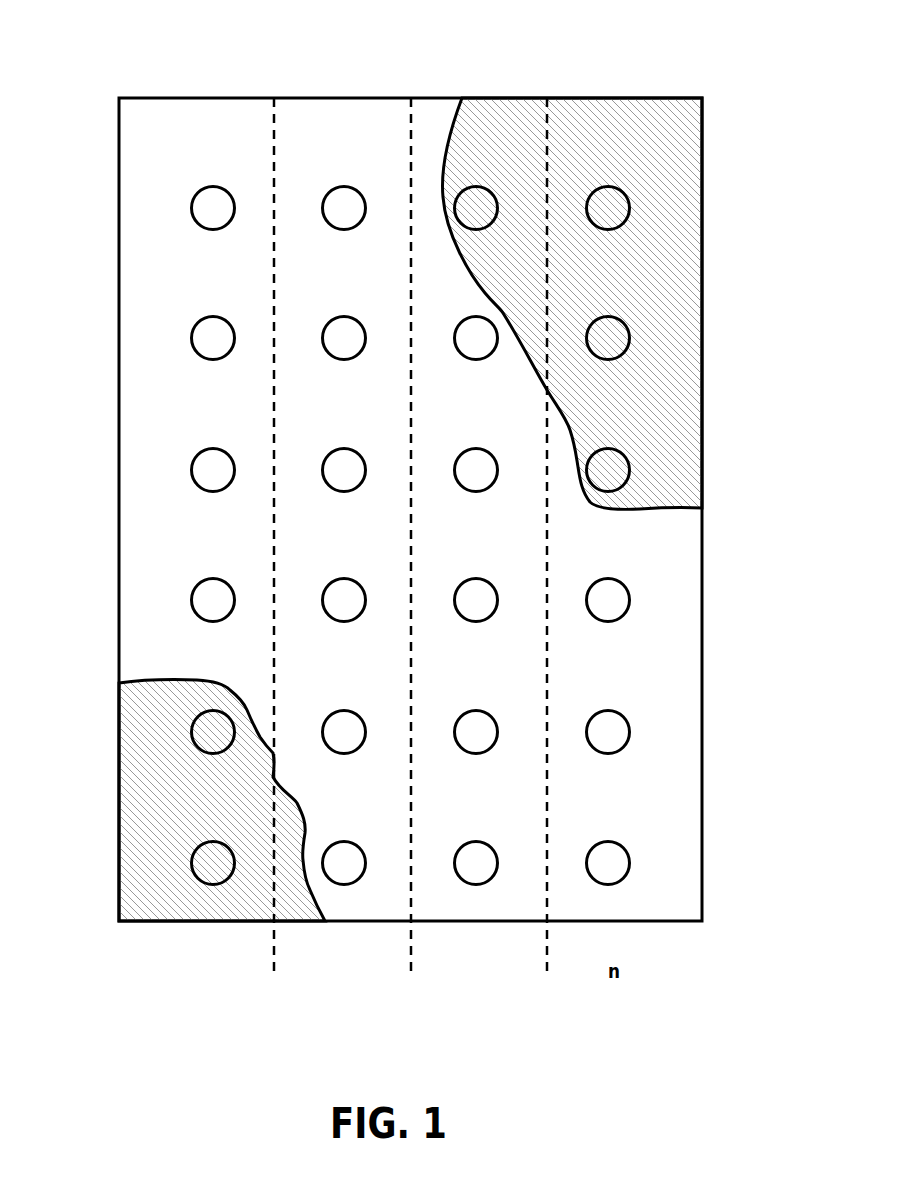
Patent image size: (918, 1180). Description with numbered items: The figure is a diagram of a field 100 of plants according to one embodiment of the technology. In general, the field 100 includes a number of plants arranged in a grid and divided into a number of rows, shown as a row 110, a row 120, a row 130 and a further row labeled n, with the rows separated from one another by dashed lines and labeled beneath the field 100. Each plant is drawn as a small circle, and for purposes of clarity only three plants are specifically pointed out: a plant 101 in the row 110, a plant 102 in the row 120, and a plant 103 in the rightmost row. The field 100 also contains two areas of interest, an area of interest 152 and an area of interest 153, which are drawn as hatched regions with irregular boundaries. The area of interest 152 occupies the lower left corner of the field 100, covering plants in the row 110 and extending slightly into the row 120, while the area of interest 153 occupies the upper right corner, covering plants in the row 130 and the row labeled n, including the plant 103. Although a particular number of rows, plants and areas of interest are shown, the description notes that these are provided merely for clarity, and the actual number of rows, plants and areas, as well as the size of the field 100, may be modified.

The field 100 is at (603, 40).
The plant 101 is at (216, 334).
The plant 102 is at (343, 592).
The plant 103 is at (605, 461).
The row 110 is at (231, 540).
The row 120 is at (367, 540).
The row 130 is at (501, 540).
The area of interest 152 is at (133, 778).
The area of interest 153 is at (682, 222).